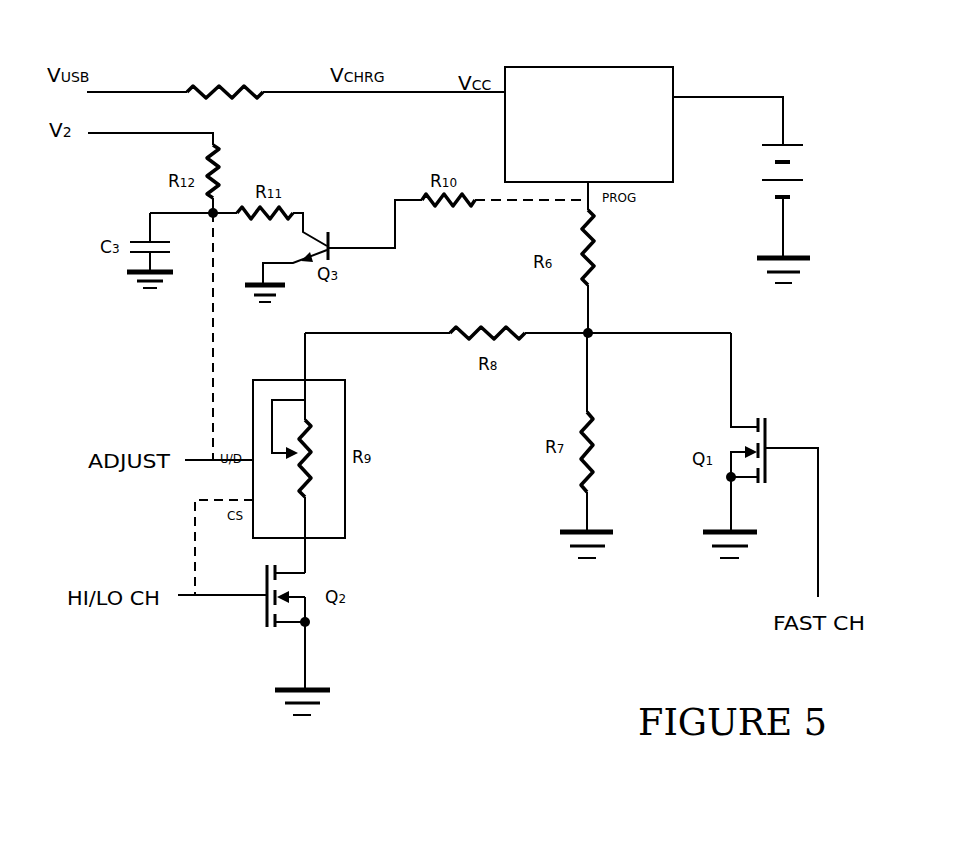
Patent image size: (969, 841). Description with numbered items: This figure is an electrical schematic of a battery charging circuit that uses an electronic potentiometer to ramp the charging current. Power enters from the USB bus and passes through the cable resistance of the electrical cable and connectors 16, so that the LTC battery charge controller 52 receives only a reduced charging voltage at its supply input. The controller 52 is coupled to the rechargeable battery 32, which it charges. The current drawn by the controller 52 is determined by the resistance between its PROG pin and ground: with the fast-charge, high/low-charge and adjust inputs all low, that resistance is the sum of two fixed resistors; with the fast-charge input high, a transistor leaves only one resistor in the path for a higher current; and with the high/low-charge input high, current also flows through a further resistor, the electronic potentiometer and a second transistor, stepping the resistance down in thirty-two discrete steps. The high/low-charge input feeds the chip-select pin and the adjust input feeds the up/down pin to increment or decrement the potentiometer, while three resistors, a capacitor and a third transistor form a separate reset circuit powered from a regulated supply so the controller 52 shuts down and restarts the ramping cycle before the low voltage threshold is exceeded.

The electrical cable and connectors 16 is at (227, 43).
The LTC1734 battery charge controller 52 is at (582, 65).
The rechargeable battery 32 is at (758, 173).